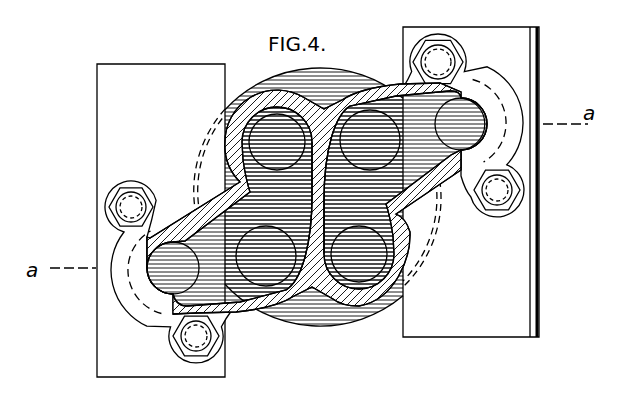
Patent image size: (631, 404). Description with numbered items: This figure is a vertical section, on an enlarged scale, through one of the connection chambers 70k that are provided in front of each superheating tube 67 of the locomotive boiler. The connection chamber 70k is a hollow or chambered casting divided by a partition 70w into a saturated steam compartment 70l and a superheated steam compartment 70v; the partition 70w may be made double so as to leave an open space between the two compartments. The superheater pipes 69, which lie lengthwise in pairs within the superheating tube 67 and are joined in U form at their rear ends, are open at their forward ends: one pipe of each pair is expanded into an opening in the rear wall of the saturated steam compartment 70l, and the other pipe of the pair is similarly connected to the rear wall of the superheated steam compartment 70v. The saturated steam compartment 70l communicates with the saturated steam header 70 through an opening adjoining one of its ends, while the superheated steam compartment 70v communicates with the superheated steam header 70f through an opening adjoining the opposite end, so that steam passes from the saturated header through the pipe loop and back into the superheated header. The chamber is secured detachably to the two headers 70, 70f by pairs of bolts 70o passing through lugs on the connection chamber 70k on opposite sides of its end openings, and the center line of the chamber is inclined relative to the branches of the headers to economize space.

The superheating tube 67 is at (321, 326).
The superheater pipes 69 is at (298, 154).
The saturated steam header 70 is at (471, 182).
The superheated steam header 70f is at (161, 220).
The connection chamber 70k is at (236, 189).
The saturated steam compartment 70l is at (325, 198).
The bolts 70o is at (133, 190).
The superheated steam compartment 70v is at (229, 206).
The partition 70w is at (405, 190).